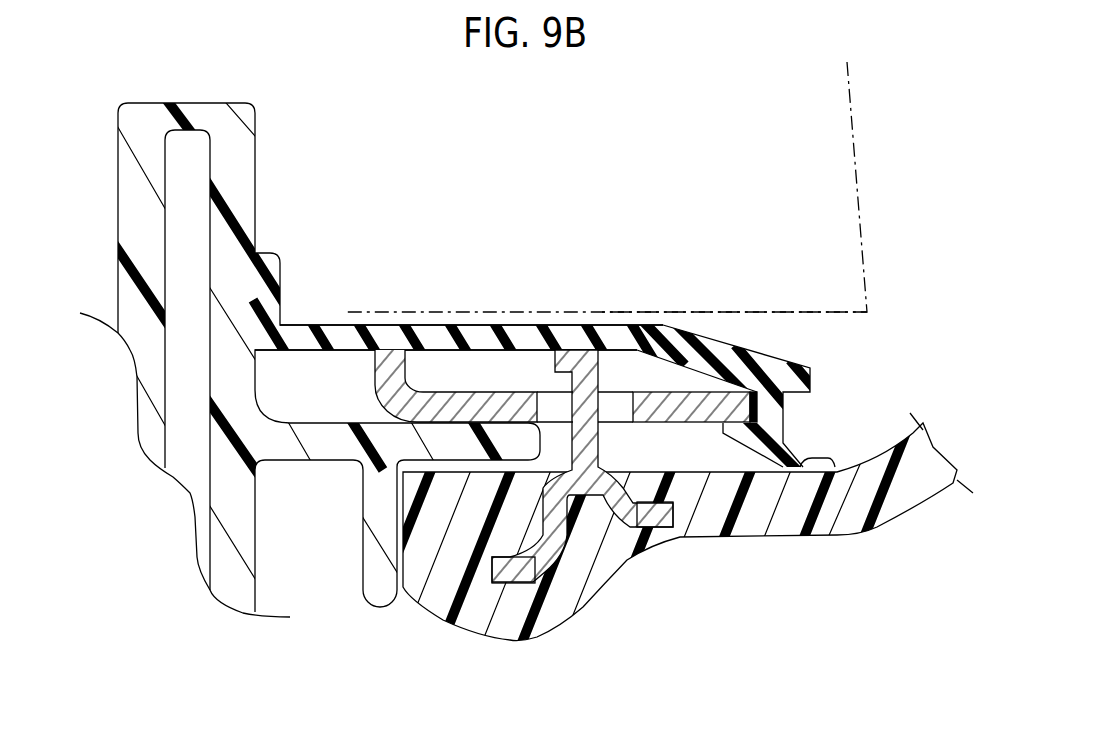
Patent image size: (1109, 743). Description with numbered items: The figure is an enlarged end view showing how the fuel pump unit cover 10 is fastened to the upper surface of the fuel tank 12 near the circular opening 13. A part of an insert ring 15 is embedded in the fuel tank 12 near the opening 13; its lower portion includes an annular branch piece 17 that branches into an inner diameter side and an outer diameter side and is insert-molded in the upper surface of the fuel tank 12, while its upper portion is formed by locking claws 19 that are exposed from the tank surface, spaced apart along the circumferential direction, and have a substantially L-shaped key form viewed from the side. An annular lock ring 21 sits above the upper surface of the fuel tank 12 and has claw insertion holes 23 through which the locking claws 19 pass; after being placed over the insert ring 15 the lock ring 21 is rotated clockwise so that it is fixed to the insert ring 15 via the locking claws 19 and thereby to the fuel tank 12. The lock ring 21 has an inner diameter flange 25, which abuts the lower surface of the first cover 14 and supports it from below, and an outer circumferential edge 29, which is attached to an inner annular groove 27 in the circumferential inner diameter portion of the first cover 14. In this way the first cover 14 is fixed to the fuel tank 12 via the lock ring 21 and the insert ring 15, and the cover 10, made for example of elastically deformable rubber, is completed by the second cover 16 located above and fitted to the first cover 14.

The fuel pump unit cover 10 is at (887, 157).
The fuel tank 12 is at (880, 437).
The opening 13 is at (363, 553).
The first cover 14 is at (578, 324).
The insert ring 15 is at (612, 444).
The second cover 16 is at (863, 218).
The annular branch piece 17 is at (492, 573).
The locking claw 19 is at (553, 357).
The lock ring 21 is at (645, 383).
The claw insertion hole 23 is at (547, 391).
The inner diameter flange 25 is at (390, 352).
The inner annular groove 27 is at (742, 392).
The outer circumferential edge 29 is at (760, 403).